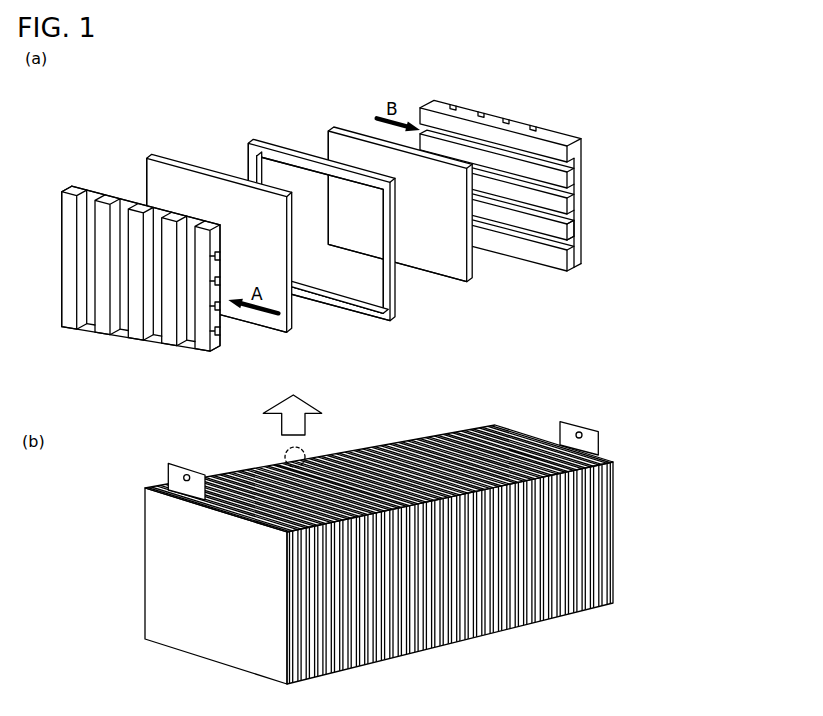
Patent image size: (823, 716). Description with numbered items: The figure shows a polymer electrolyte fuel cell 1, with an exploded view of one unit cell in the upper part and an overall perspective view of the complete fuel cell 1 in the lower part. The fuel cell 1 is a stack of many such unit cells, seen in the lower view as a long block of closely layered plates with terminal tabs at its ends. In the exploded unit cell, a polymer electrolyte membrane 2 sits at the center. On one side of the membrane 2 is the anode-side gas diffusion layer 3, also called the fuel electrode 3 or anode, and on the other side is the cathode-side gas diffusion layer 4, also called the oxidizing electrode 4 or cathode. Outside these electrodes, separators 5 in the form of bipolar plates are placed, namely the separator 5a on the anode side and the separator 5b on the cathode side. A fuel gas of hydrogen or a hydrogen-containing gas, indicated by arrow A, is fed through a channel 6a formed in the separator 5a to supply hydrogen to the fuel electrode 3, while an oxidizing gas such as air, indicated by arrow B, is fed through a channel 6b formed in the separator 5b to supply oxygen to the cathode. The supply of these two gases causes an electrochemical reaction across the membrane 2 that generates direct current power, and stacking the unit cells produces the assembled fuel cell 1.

The fuel cell 1 is at (411, 678).
The polymer electrolyte membrane 2 is at (282, 157).
The anode-side gas diffusion layer 3 is at (193, 187).
The cathode-side gas diffusion layer 4 is at (350, 150).
The separators 5 is at (341, 228).
The separator 5a is at (125, 203).
The separator 5b is at (457, 108).
The channel 6a is at (223, 330).
The channel 6b is at (566, 223).